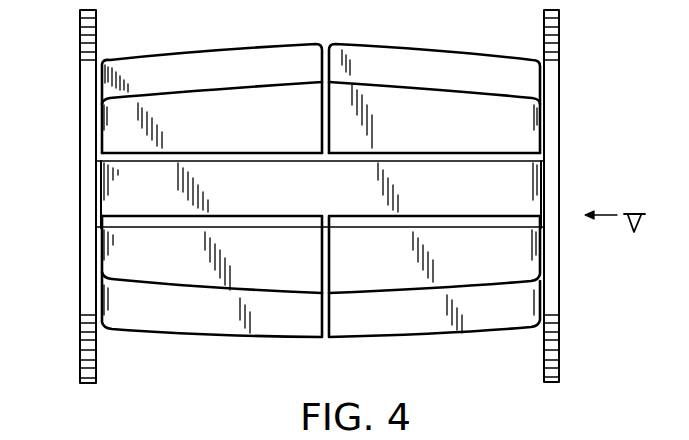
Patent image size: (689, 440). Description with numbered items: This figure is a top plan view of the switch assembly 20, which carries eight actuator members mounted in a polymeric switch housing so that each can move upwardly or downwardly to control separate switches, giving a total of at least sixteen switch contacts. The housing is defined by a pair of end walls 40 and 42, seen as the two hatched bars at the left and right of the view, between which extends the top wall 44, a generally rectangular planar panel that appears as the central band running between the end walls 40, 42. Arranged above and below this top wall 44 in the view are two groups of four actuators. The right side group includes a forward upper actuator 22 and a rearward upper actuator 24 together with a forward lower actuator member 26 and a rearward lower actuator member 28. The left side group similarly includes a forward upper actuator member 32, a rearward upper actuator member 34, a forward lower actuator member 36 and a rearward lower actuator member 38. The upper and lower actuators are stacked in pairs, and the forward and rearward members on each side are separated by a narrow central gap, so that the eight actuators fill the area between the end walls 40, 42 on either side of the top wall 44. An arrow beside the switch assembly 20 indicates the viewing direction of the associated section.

The switch assembly 20 is at (598, 232).
The upper actuator 22 is at (523, 258).
The upper actuator 24 is at (107, 267).
The forward lower actuator member 26 is at (432, 338).
The rearward lower actuator member 28 is at (168, 324).
The forward upper actuator member 32 is at (532, 128).
The rearward upper actuator member 34 is at (105, 126).
The forward lower actuator member 36 is at (465, 55).
The rearward lower actuator member 38 is at (250, 50).
The end wall 40 is at (561, 344).
The end wall 42 is at (80, 248).
The top wall 44 is at (532, 182).